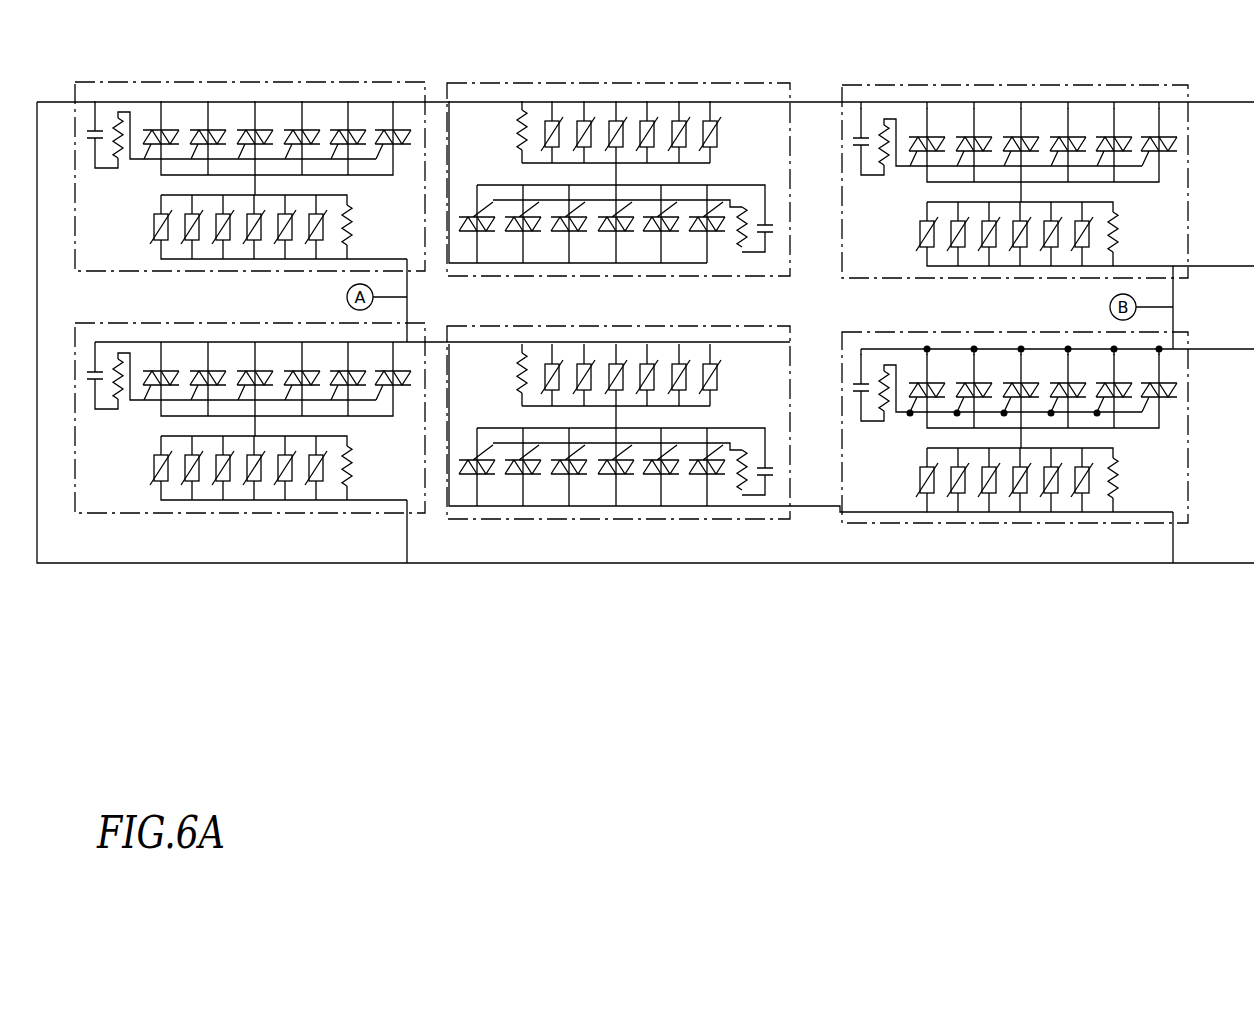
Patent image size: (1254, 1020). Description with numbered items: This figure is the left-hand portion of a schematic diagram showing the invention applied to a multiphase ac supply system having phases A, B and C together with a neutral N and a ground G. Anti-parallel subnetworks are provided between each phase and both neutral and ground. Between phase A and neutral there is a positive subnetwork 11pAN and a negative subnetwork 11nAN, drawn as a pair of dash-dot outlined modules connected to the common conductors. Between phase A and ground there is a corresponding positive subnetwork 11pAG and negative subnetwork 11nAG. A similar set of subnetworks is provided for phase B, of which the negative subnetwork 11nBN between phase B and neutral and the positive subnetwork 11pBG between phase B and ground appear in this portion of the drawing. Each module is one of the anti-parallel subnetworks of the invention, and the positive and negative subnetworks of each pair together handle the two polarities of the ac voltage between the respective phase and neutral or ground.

The negative subnetwork 11nAN is at (203, 82).
The positive subnetwork 11pAN is at (573, 83).
The negative subnetwork 11nBN is at (963, 85).
The positive subnetwork 11pAG is at (203, 323).
The negative subnetwork 11nAG is at (573, 326).
The positive subnetwork 11pBG is at (963, 332).